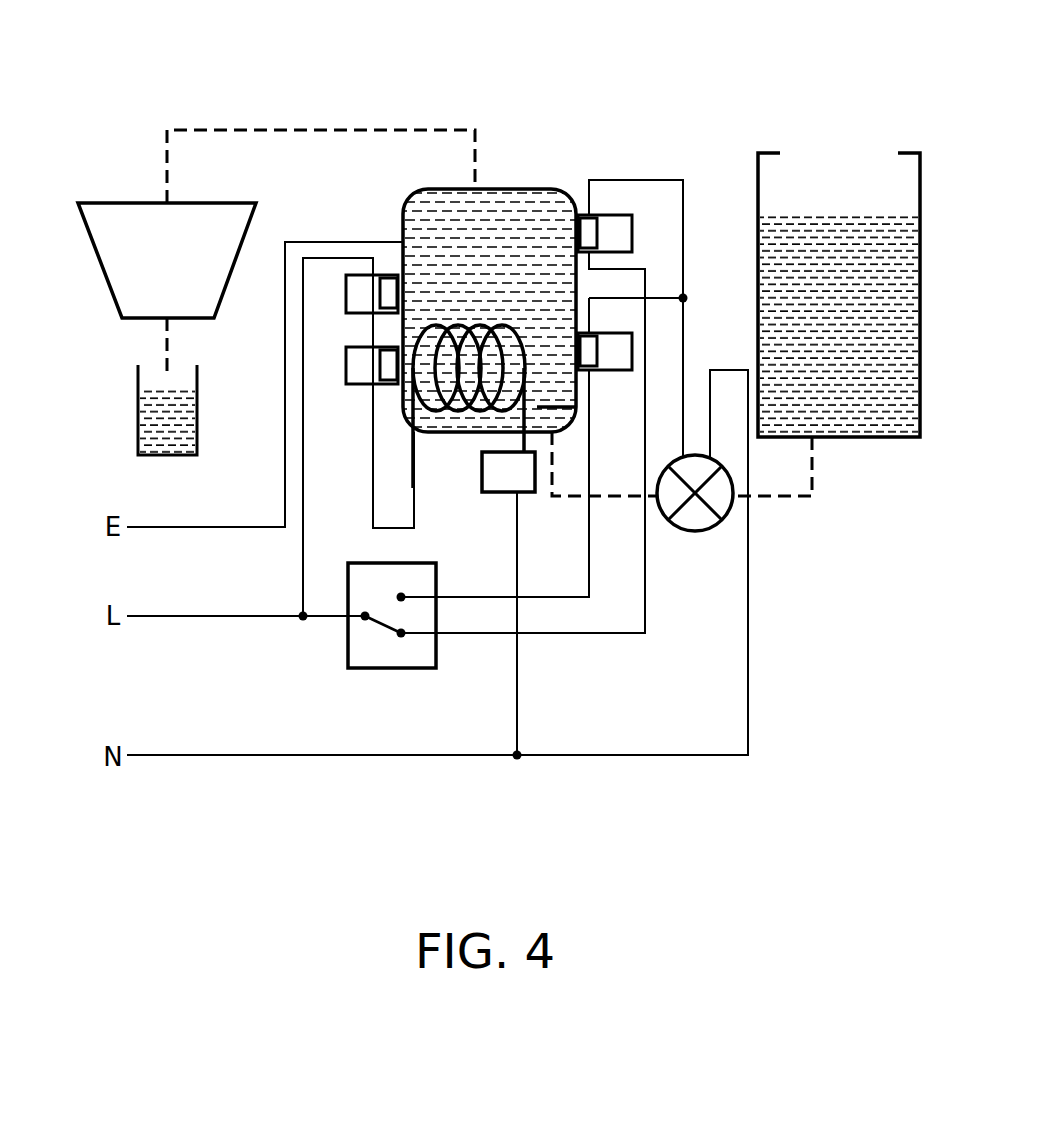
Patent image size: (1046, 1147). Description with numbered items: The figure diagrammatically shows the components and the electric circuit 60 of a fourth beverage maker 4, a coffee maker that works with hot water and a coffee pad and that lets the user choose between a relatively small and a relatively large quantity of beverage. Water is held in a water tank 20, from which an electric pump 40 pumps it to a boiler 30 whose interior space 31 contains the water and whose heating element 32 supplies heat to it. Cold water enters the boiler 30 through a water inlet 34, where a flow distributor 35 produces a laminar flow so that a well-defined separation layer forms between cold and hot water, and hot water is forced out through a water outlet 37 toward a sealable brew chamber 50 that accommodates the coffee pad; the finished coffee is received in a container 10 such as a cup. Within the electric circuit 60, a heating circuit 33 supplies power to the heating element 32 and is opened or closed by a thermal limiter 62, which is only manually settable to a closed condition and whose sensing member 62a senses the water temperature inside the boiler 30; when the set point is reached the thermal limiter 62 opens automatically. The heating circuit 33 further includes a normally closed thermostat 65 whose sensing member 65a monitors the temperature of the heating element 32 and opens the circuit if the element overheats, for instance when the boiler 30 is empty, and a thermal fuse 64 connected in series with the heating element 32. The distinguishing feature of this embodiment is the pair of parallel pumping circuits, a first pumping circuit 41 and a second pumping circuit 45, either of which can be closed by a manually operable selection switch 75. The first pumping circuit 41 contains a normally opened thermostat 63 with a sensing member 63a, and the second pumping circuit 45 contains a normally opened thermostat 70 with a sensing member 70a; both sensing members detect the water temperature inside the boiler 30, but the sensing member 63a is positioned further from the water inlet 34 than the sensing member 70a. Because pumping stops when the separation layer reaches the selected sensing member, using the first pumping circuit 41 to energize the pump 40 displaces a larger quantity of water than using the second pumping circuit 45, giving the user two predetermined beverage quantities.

The fourth beverage maker 4 is at (180, 76).
The container 10 is at (145, 421).
The water tank 20 is at (843, 182).
The boiler 30 is at (523, 205).
The interior space 31 is at (437, 215).
The heating element 32 is at (460, 413).
The heating circuit 33 is at (308, 204).
The water inlet 34 is at (553, 432).
The flow distributor 35 is at (555, 432).
The water outlet 37 is at (470, 188).
The electric pump 40 is at (697, 521).
The first pumping circuit 41 is at (536, 652).
The second pumping circuit 45 is at (593, 612).
The brew chamber 50 is at (152, 277).
The electric circuit 60 is at (437, 518).
The thermal limiter 62 is at (346, 300).
The sensing member 62a is at (388, 291).
The normally opened thermostat 63 is at (615, 238).
The sensing member 63a is at (596, 240).
The thermal fuse 64 is at (494, 486).
The normally closed thermostat 65 is at (346, 365).
The sensing member 65a is at (388, 378).
The normally opened thermostat 70 is at (615, 372).
The sensing member 70a is at (596, 360).
The selection switch 75 is at (385, 628).